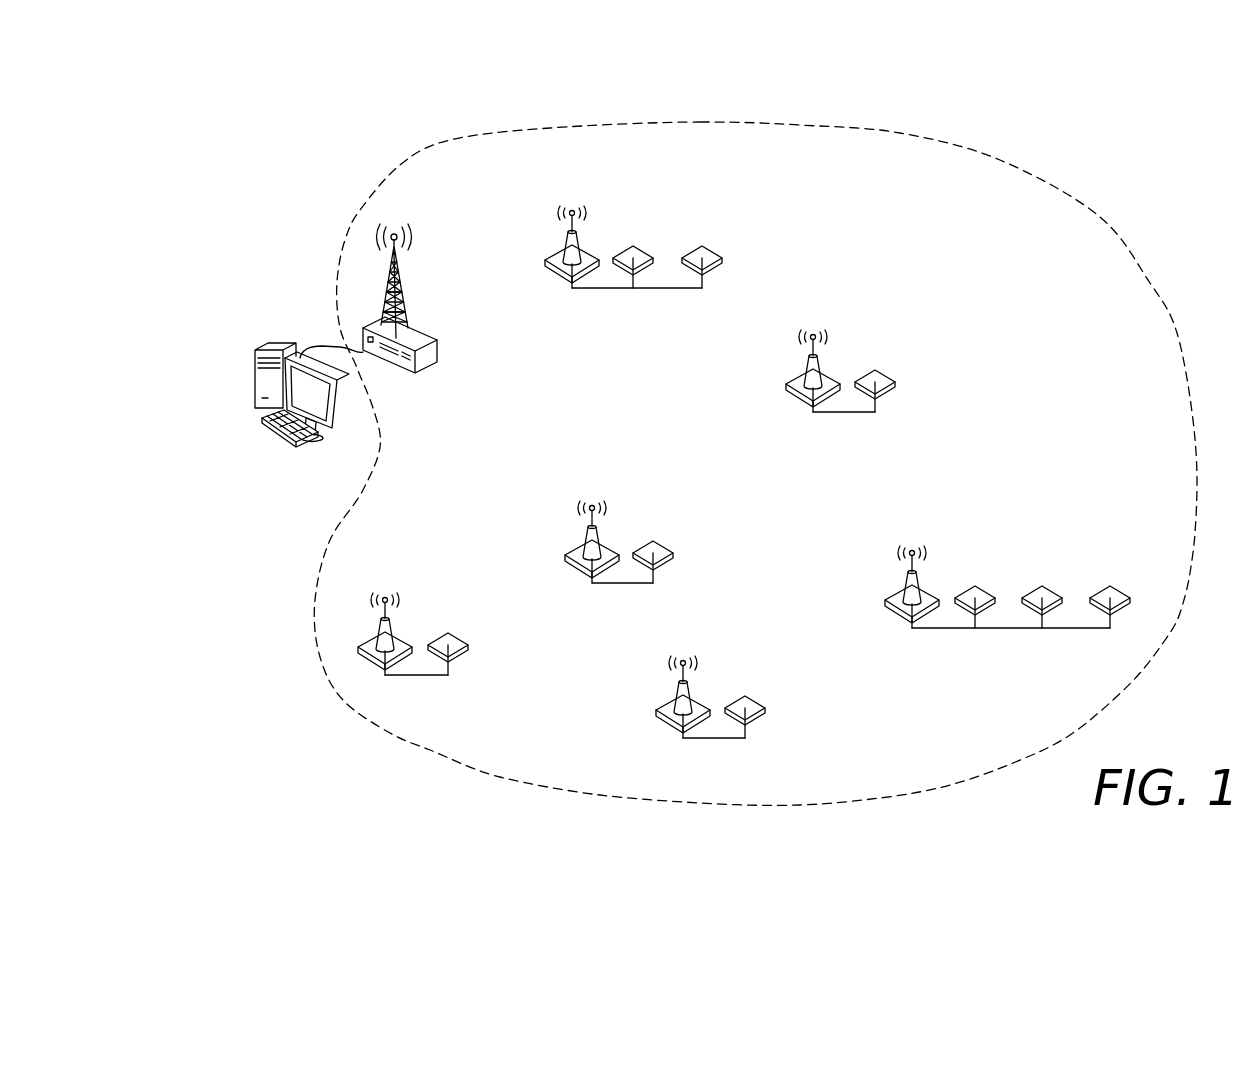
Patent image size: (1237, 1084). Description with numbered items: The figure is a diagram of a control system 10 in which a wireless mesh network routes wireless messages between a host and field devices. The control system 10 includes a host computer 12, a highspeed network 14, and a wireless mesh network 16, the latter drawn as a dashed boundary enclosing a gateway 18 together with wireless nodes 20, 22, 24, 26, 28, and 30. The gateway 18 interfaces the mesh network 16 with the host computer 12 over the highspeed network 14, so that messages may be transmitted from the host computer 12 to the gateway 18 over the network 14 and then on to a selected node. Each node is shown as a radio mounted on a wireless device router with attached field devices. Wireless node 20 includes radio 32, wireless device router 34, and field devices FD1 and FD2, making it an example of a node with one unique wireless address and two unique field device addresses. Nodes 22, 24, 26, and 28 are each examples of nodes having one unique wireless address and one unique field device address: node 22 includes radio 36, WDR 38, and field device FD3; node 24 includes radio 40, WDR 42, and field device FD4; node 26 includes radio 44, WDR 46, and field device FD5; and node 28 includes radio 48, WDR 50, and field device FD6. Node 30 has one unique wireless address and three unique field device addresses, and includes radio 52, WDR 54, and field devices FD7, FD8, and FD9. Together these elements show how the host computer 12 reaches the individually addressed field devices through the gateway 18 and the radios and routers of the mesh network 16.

The control system 10 is at (348, 760).
The host computer 12 is at (225, 426).
The highspeed network 14 is at (330, 346).
The wireless mesh network 16 is at (1106, 213).
The gateway 18 is at (439, 375).
The wireless node 20 is at (611, 295).
The wireless node 22 is at (891, 369).
The wireless node 24 is at (451, 645).
The wireless node 26 is at (658, 554).
The wireless node 28 is at (736, 705).
The wireless node 30 is at (986, 640).
The radio 32 is at (563, 241).
The wireless device router 34 is at (548, 264).
The radio 36 is at (802, 368).
The wireless device router 38 is at (793, 392).
The radio 40 is at (379, 633).
The wireless device router 42 is at (366, 651).
The radio 44 is at (586, 540).
The wireless device router 46 is at (577, 563).
The radio 48 is at (676, 690).
The wireless device router 50 is at (657, 716).
The radio 52 is at (901, 580).
The wireless device router 54 is at (890, 602).
The field device FD1 is at (633, 246).
The field device FD2 is at (702, 246).
The field device FD3 is at (875, 370).
The field device FD4 is at (448, 633).
The field device FD5 is at (653, 541).
The field device FD6 is at (745, 696).
The field device FD7 is at (975, 586).
The field device FD8 is at (1042, 586).
The field device FD9 is at (1110, 586).